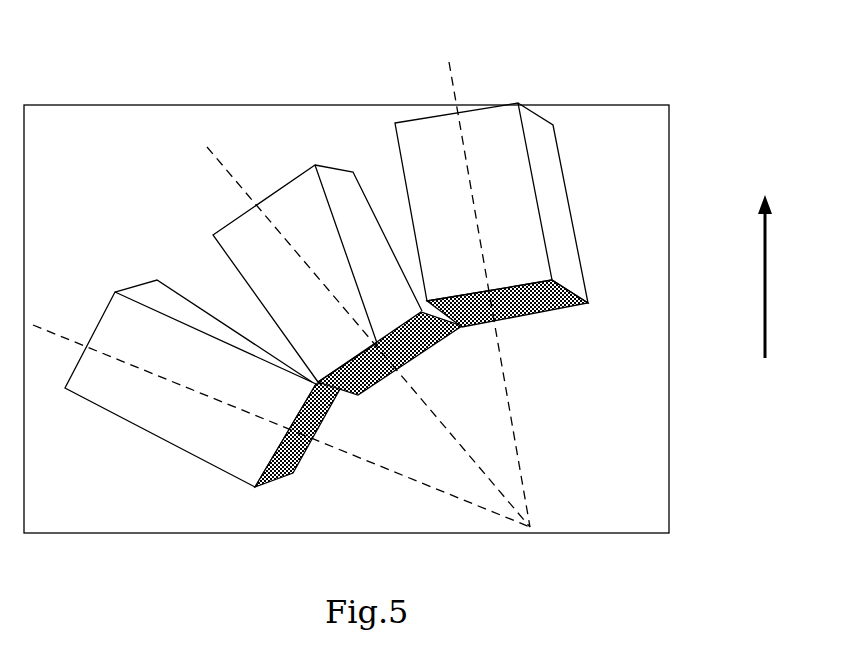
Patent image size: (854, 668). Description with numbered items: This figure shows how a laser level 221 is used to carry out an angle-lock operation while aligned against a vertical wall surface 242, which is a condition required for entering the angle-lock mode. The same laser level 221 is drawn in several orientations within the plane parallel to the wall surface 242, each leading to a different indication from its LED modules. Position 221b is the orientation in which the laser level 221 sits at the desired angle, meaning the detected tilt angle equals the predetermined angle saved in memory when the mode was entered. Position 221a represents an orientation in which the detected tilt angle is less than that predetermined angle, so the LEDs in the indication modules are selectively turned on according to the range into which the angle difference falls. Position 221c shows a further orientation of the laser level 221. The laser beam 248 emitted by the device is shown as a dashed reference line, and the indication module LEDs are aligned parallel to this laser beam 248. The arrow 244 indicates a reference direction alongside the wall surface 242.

The laser level 221 is at (326, 314).
The position of laser level with detected tilt angle less than predetermined angle 221a is at (507, 160).
The position of laser level at desired angle 221b is at (312, 227).
The position of laser level 221c is at (146, 338).
The wall surface 242 is at (584, 340).
The direction arrow 244 is at (733, 276).
The laser beam 248 is at (373, 463).